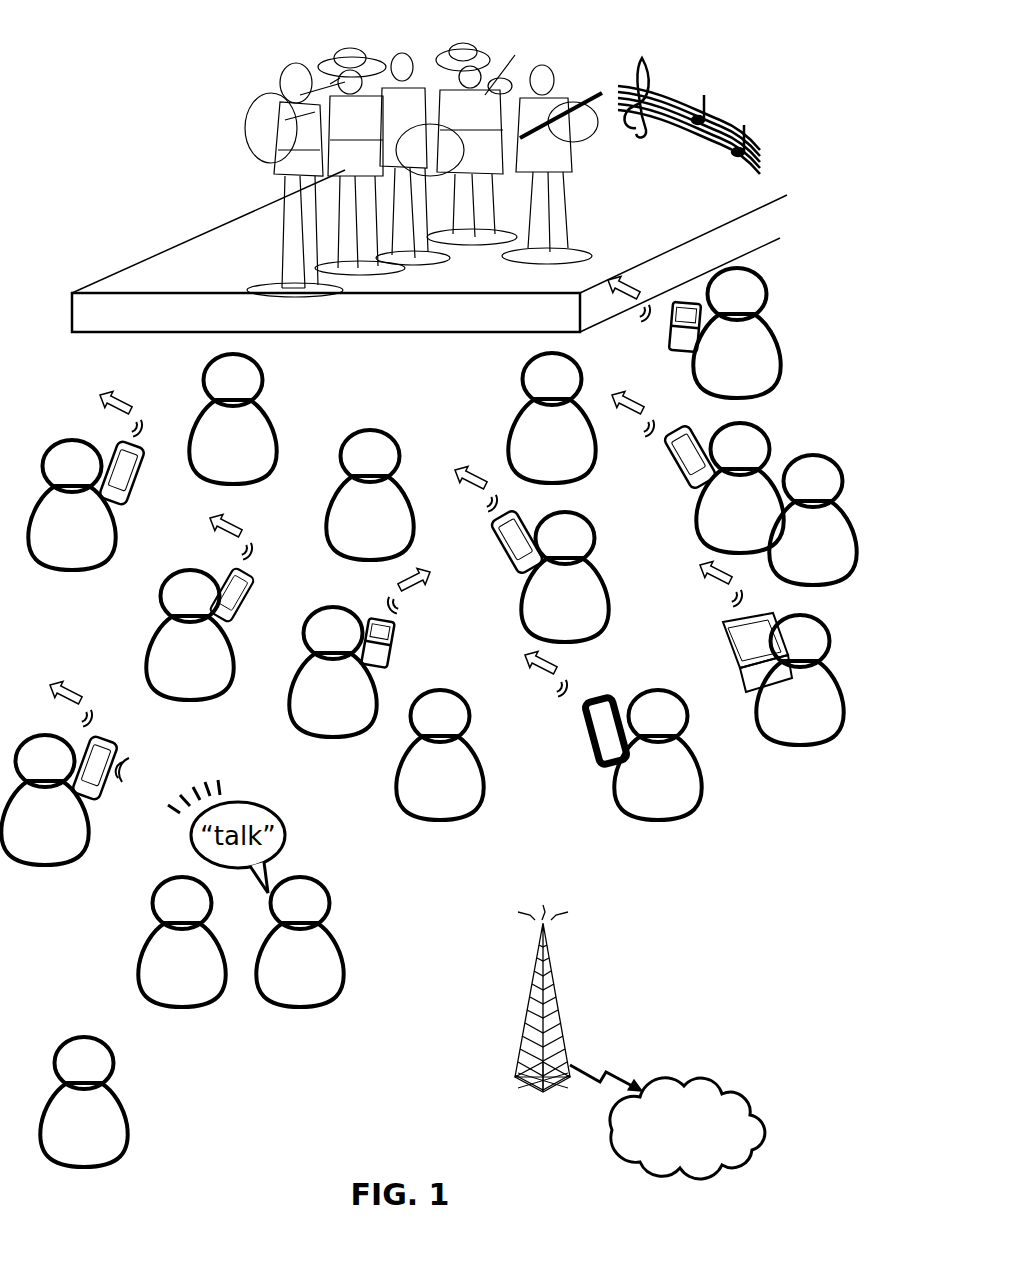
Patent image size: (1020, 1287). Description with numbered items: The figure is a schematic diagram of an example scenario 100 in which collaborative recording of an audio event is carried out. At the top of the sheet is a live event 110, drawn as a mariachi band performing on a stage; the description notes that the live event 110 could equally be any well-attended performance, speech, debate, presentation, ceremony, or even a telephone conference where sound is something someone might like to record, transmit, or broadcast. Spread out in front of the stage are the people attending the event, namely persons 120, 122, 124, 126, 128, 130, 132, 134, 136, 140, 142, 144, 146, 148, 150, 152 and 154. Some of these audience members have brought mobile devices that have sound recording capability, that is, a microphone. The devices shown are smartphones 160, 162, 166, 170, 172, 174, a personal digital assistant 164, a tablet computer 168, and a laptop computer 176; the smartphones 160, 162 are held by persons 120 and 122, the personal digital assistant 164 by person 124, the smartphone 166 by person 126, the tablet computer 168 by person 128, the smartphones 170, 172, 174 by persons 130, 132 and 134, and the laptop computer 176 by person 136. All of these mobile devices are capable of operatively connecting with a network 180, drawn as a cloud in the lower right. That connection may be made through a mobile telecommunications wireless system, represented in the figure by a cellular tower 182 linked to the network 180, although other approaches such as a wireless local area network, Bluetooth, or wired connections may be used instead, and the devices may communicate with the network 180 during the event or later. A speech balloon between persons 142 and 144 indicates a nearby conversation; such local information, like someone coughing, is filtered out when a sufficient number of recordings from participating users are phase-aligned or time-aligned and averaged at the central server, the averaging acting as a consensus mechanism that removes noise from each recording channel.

The scenario 100 is at (156, 103).
The live event 110 is at (196, 271).
The person 120 is at (51, 555).
The person 122 is at (17, 846).
The person 124 is at (162, 685).
The person 126 is at (309, 716).
The person 128 is at (641, 808).
The person 130 is at (539, 628).
The person 132 is at (716, 541).
The person 134 is at (714, 385).
The person 136 is at (781, 731).
The person 140 is at (212, 468).
The person 142 is at (191, 1040).
The person 144 is at (269, 988).
The person 146 is at (349, 545).
The person 148 is at (537, 466).
The person 150 is at (792, 568).
The person 152 is at (417, 803).
The person 154 is at (63, 1150).
The smartphone 160 is at (107, 438).
The smartphone 162 is at (112, 746).
The personal digital assistant (PDA) 164 is at (240, 597).
The smartphone 166 is at (392, 650).
The tablet computer 168 is at (585, 752).
The smartphone 170 is at (512, 568).
The smartphone 172 is at (688, 482).
The smartphone 174 is at (673, 345).
The laptop computer 176 is at (735, 655).
The network 180 is at (752, 1139).
The cellular tower 182 is at (525, 1012).